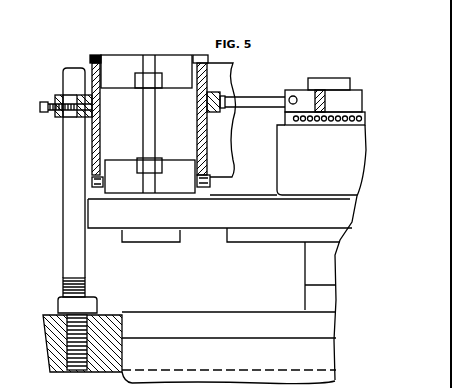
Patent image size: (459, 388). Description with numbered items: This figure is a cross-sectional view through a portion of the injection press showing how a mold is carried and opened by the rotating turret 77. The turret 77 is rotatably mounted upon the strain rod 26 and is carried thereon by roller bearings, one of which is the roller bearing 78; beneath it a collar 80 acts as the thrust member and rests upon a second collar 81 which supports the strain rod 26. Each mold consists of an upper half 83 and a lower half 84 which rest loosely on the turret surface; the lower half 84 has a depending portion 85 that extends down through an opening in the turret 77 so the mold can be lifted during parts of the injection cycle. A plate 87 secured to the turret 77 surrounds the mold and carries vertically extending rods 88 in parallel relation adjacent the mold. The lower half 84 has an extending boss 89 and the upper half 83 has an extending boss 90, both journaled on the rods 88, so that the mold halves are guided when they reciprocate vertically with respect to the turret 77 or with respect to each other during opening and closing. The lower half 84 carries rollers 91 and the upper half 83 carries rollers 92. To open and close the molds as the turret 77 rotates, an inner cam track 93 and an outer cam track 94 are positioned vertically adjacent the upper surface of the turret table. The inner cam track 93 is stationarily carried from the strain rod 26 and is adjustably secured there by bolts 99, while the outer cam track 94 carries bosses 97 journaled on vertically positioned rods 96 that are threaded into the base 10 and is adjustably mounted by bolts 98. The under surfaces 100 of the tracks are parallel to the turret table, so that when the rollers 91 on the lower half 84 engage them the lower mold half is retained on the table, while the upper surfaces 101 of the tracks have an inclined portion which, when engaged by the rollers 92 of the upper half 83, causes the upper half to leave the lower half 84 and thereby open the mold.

The base 10 is at (50, 316).
The strain rod 26 is at (330, 78).
The turret 77 is at (231, 214).
The roller bearing 78 is at (293, 117).
The collar 80 is at (307, 270).
The collar 81 is at (307, 297).
The upper half 83 is at (169, 55).
The lower half 84 is at (126, 162).
The depending portion 85 is at (156, 240).
The plate 87 is at (204, 194).
The rod 88 is at (156, 120).
The boss 89 is at (162, 166).
The boss 90 is at (163, 79).
The roller 91 is at (104, 182).
The roller 92 is at (94, 57).
The inner cam track 93 is at (232, 147).
The outer cam track 94 is at (100, 134).
The rod 96 is at (73, 217).
The boss 97 is at (57, 95).
The bolt 98 is at (46, 109).
The bolt 99 is at (293, 96).
The under surface 100 is at (220, 178).
The upper surface 101 is at (233, 64).